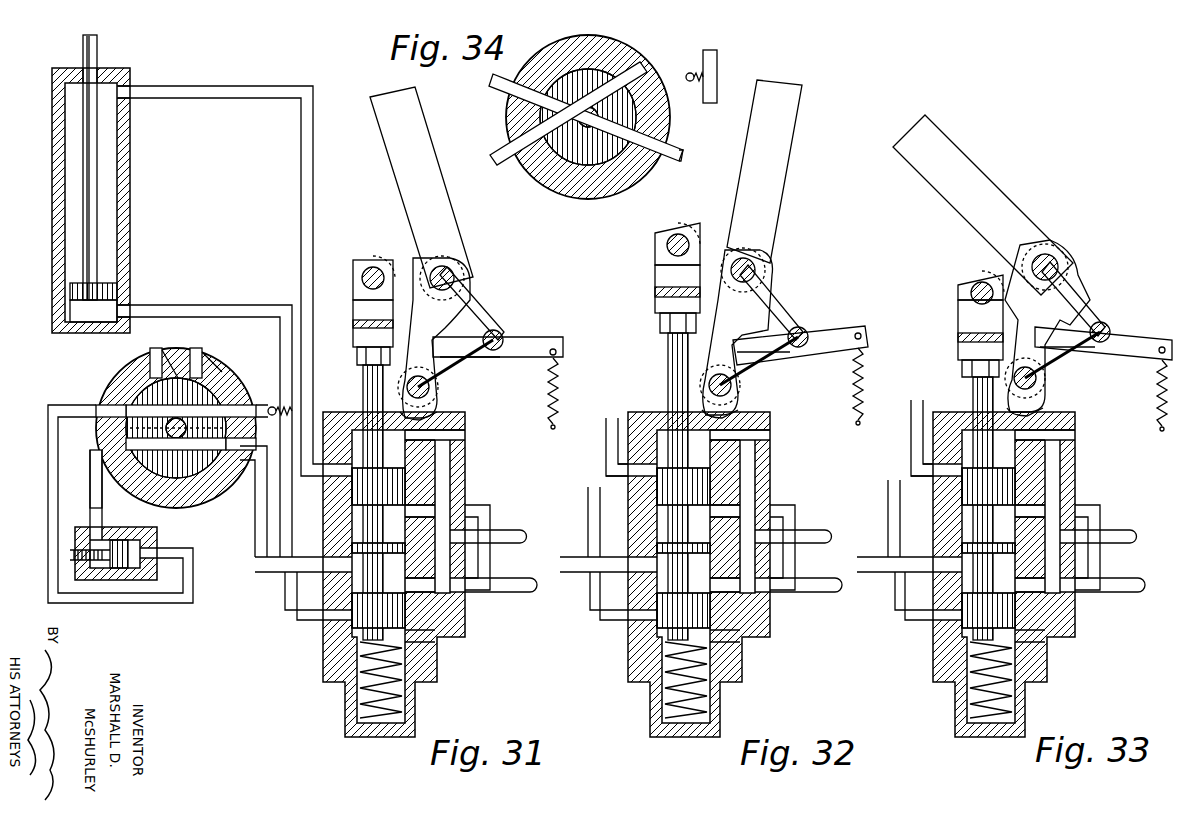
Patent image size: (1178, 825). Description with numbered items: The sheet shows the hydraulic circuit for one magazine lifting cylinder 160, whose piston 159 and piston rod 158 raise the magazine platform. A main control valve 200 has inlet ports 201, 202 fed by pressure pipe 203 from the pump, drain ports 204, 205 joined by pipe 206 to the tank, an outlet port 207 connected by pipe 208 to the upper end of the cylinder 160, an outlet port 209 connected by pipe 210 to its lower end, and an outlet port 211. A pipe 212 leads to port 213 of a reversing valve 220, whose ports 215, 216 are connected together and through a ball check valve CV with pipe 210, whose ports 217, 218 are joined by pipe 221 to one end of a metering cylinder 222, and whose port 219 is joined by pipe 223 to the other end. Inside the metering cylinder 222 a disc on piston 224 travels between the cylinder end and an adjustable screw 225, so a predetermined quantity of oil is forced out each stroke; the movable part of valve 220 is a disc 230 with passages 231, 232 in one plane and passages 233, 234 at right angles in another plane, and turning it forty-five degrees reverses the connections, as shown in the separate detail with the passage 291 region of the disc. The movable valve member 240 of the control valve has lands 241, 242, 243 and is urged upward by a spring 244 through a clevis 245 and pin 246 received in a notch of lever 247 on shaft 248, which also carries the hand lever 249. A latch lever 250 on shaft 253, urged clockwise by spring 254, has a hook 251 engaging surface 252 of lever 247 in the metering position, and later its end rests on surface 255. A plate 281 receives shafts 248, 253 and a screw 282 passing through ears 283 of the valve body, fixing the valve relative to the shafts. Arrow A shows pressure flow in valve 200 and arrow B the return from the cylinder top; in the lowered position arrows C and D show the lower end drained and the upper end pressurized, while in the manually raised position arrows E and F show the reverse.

In FIG. 31, the piston rod 158 is at (97, 46).
In FIG. 31, the piston 159 is at (120, 293).
In FIG. 31, the cylinder 160 is at (132, 238).
In FIG. 31, the main control valve 200 is at (345, 660).
In FIG. 32, the main control valve 200 is at (650, 660).
In FIG. 33, the main control valve 200 is at (955, 660).
In FIG. 31, the inlet port 201 is at (430, 510).
In FIG. 32, the inlet port 201 is at (735, 510).
In FIG. 33, the inlet port 201 is at (1040, 510).
In FIG. 31, the inlet port 202 is at (430, 585).
In FIG. 32, the inlet port 202 is at (735, 585).
In FIG. 33, the inlet port 202 is at (1040, 585).
In FIG. 31, the pipe 203 is at (512, 592).
In FIG. 32, the pipe 203 is at (818, 592).
In FIG. 33, the pipe 203 is at (1130, 592).
In FIG. 31, the drain port 204 is at (445, 433).
In FIG. 32, the drain port 204 is at (750, 433).
In FIG. 33, the drain port 204 is at (1055, 433).
In FIG. 31, the drain port 205 is at (440, 642).
In FIG. 32, the drain port 205 is at (745, 642).
In FIG. 33, the drain port 205 is at (1050, 642).
In FIG. 31, the pipe 206 is at (512, 532).
In FIG. 32, the pipe 206 is at (810, 530).
In FIG. 33, the pipe 206 is at (1133, 530).
In FIG. 31, the outlet port 207 is at (345, 440).
In FIG. 32, the outlet port 207 is at (628, 455).
In FIG. 33, the outlet port 207 is at (933, 458).
In FIG. 31, the pipe 208 is at (300, 136).
In FIG. 32, the pipe 208 is at (606, 440).
In FIG. 33, the pipe 208 is at (911, 433).
In FIG. 31, the outlet port 209 is at (310, 618).
In FIG. 32, the outlet port 209 is at (620, 618).
In FIG. 33, the outlet port 209 is at (922, 618).
In FIG. 31, the pipe 210 is at (232, 307).
In FIG. 34, the pipe 210 is at (703, 55).
In FIG. 31, the outlet port 211 is at (323, 565).
In FIG. 32, the outlet port 211 is at (628, 565).
In FIG. 33, the outlet port 211 is at (933, 565).
In FIG. 31, the pipe 212 is at (260, 557).
In FIG. 32, the pipe 212 is at (588, 495).
In FIG. 33, the pipe 212 is at (888, 498).
In FIG. 34, the pipe 212 is at (684, 153).
In FIG. 31, the port 213 is at (256, 444).
In FIG. 31, the port 215 is at (250, 385).
In FIG. 31, the port 216 is at (226, 370).
In FIG. 31, the port 217 is at (158, 370).
In FIG. 31, the port 218 is at (110, 432).
In FIG. 31, the port 219 is at (100, 490).
In FIG. 31, the valve 220 is at (105, 365).
In FIG. 31, the pipe 221 is at (48, 505).
In FIG. 34, the pipe 221 is at (500, 97).
In FIG. 31, the metering cylinder 222 is at (157, 540).
In FIG. 31, the pipe 223 is at (90, 510).
In FIG. 34, the pipe 223 is at (493, 162).
In FIG. 31, the piston 224 is at (128, 540).
In FIG. 31, the screw 225 is at (70, 556).
In FIG. 31, the disc 230 is at (215, 470).
In FIG. 34, the disc 230 is at (605, 42).
In FIG. 31, the passage 231 is at (256, 410).
In FIG. 31, the passage 232 is at (250, 440).
In FIG. 31, the passage 233 is at (180, 355).
In FIG. 31, the passage 234 is at (200, 365).
In FIG. 31, the movable valve member 240 is at (363, 388).
In FIG. 32, the movable valve member 240 is at (668, 362).
In FIG. 33, the movable valve member 240 is at (973, 380).
In FIG. 31, the land 241 is at (405, 480).
In FIG. 32, the land 241 is at (710, 480).
In FIG. 33, the land 241 is at (1015, 480).
In FIG. 31, the land 242 is at (405, 545).
In FIG. 32, the land 242 is at (710, 546).
In FIG. 33, the land 242 is at (1015, 548).
In FIG. 31, the land 243 is at (410, 620).
In FIG. 32, the land 243 is at (715, 620).
In FIG. 33, the land 243 is at (1020, 625).
In FIG. 31, the spring 244 is at (405, 712).
In FIG. 32, the spring 244 is at (710, 712).
In FIG. 33, the spring 244 is at (1015, 712).
In FIG. 31, the clevis 245 is at (353, 340).
In FIG. 32, the clevis 245 is at (655, 300).
In FIG. 33, the clevis 245 is at (958, 345).
In FIG. 31, the pin 246 is at (373, 267).
In FIG. 32, the pin 246 is at (680, 234).
In FIG. 33, the pin 246 is at (972, 290).
In FIG. 31, the lever 247 is at (358, 262).
In FIG. 32, the lever 247 is at (658, 258).
In FIG. 33, the lever 247 is at (1000, 275).
In FIG. 31, the shaft 248 is at (454, 275).
In FIG. 32, the shaft 248 is at (755, 270).
In FIG. 33, the shaft 248 is at (1058, 265).
In FIG. 31, the lever 249 is at (448, 212).
In FIG. 32, the lever 249 is at (785, 192).
In FIG. 33, the lever 249 is at (975, 158).
In FIG. 31, the lever 250 is at (540, 338).
In FIG. 32, the lever 250 is at (858, 328).
In FIG. 33, the lever 250 is at (1140, 335).
In FIG. 31, the hook portion 251 is at (430, 385).
In FIG. 32, the hook portion 251 is at (720, 373).
In FIG. 33, the hook portion 251 is at (1036, 372).
In FIG. 31, the surface 252 is at (438, 332).
In FIG. 32, the surface 252 is at (735, 320).
In FIG. 33, the surface 252 is at (1080, 310).
In FIG. 31, the shaft 253 is at (497, 332).
In FIG. 32, the shaft 253 is at (802, 328).
In FIG. 33, the shaft 253 is at (1106, 325).
In FIG. 31, the spring 254 is at (560, 405).
In FIG. 32, the spring 254 is at (856, 398).
In FIG. 33, the spring 254 is at (1160, 400).
In FIG. 31, the surface 255 is at (480, 358).
In FIG. 32, the surface 255 is at (775, 325).
In FIG. 33, the surface 255 is at (1090, 305).
In FIG. 31, the plate 281 is at (480, 300).
In FIG. 32, the plate 281 is at (790, 362).
In FIG. 33, the plate 281 is at (1105, 358).
In FIG. 31, the screw 282 is at (460, 395).
In FIG. 32, the screw 282 is at (760, 380).
In FIG. 33, the screw 282 is at (1070, 372).
In FIG. 31, the ears 283 is at (440, 411).
In FIG. 32, the ears 283 is at (742, 410).
In FIG. 33, the ears 283 is at (1046, 410).
In FIG. 31, the passage 291 is at (150, 440).
In FIG. 31, the ball check valve CV is at (277, 392).
In FIG. 31, the arrow A is at (358, 571).
In FIG. 31, the arrow B is at (399, 458).
In FIG. 32, the arrow C is at (754, 663).
In FIG. 32, the arrow D is at (614, 516).
In FIG. 33, the arrow E is at (962, 468).
In FIG. 33, the arrow F is at (914, 583).